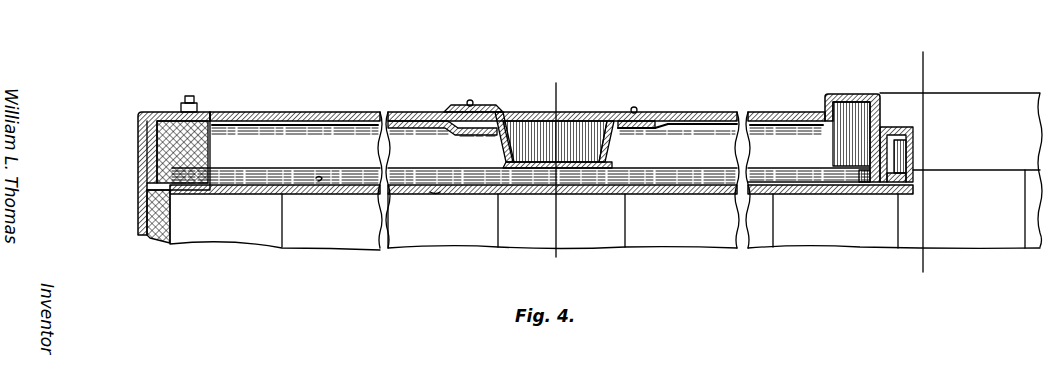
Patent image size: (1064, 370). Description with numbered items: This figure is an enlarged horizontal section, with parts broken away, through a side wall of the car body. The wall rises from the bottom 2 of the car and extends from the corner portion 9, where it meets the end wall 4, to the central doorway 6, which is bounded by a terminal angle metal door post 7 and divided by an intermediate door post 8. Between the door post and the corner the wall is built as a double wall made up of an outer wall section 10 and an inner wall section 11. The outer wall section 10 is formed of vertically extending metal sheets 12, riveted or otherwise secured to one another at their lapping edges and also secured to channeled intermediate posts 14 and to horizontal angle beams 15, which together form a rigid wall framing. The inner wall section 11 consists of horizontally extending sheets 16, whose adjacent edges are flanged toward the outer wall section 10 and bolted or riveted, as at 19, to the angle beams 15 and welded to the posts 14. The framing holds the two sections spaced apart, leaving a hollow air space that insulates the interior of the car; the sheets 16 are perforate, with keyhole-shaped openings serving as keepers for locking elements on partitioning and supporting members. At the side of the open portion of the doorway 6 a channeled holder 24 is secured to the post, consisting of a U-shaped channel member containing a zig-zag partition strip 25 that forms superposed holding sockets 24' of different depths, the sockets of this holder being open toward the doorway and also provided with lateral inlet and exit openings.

The bottom 2 is at (490, 240).
The end wall 4 is at (138, 186).
The doorway 6 is at (958, 144).
The terminal door post 7 is at (880, 80).
The intermediate door post 8 is at (922, 162).
The corner portion 9 is at (145, 110).
The outer wall section 10 is at (440, 110).
The inner wall section 11 is at (428, 196).
The metal sheet 12 is at (412, 113).
The channeled intermediate post 14 is at (580, 137).
The longitudinal angle beam 15 is at (335, 137).
The inner wall sheet 16 is at (700, 194).
The bolt or rivet 19 is at (318, 178).
The channeled holder 24 is at (923, 156).
The holding socket 24' is at (921, 125).
The zig-zag partition strip 25 is at (908, 179).